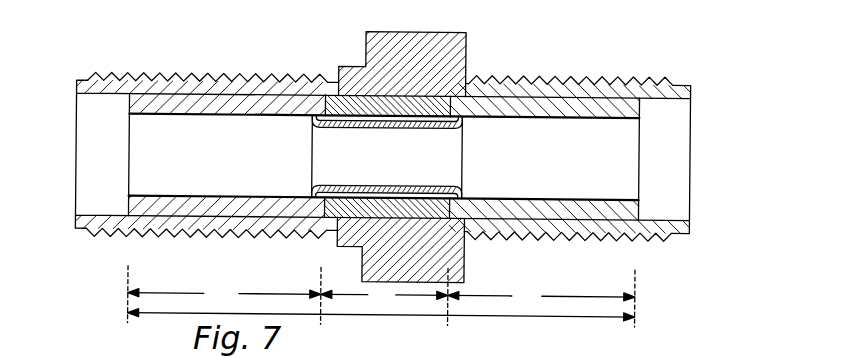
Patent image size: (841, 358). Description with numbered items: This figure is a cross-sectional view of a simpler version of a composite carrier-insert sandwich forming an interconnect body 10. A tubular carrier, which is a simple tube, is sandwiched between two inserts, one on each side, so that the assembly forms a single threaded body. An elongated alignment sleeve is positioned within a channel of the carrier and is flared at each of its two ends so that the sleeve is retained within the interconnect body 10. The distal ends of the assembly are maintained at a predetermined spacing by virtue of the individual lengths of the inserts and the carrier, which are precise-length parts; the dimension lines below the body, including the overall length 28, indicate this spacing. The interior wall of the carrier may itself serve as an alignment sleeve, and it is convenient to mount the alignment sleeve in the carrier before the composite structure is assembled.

The interconnect body 10 is at (383, 147).
The overall length dimension 28 is at (555, 318).